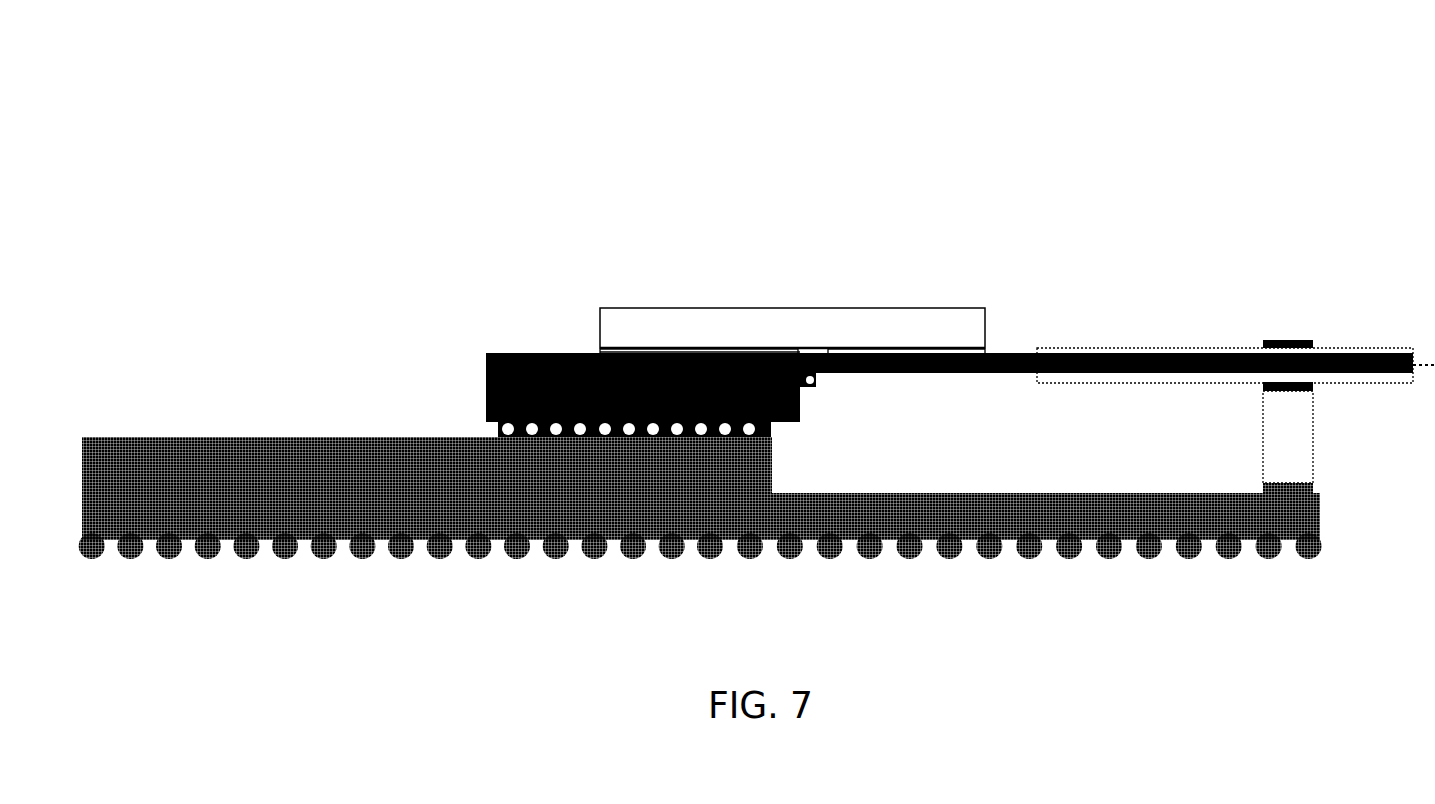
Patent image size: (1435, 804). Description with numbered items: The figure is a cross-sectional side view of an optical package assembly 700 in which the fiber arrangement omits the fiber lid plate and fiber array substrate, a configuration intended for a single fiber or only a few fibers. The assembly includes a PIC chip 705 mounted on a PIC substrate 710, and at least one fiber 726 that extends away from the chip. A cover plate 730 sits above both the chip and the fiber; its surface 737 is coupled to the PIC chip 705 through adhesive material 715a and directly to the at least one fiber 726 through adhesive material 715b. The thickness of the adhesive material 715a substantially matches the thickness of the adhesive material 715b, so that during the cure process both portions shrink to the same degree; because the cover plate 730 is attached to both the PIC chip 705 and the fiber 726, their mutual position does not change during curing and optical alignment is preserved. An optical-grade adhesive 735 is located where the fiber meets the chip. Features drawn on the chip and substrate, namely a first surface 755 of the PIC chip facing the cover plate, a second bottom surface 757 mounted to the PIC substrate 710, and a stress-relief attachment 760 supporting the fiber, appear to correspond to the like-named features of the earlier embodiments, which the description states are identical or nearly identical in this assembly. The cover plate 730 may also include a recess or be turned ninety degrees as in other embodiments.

The optical package assembly 700 is at (208, 164).
The PIC chip 705 is at (537, 385).
The PIC substrate 710 is at (417, 482).
The adhesive material 715a is at (692, 352).
The adhesive material 715b is at (955, 353).
The at least one fiber 726 is at (1122, 358).
The cover plate 730 is at (773, 330).
The optical-grade adhesive 735 is at (818, 382).
The surface 737 is at (725, 348).
The interface layer 755 is at (642, 354).
The interconnect bumps 757 is at (568, 436).
The connector 760 is at (1302, 340).